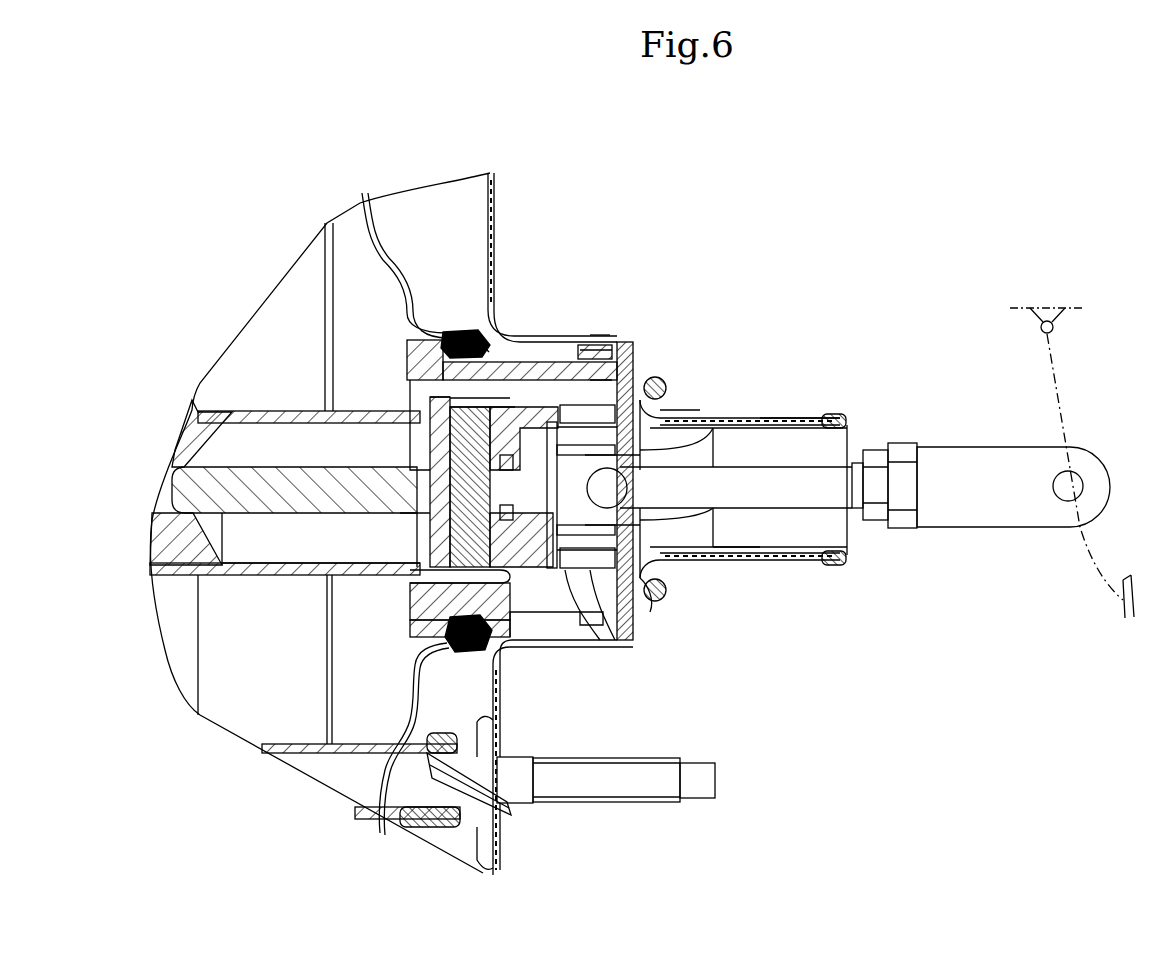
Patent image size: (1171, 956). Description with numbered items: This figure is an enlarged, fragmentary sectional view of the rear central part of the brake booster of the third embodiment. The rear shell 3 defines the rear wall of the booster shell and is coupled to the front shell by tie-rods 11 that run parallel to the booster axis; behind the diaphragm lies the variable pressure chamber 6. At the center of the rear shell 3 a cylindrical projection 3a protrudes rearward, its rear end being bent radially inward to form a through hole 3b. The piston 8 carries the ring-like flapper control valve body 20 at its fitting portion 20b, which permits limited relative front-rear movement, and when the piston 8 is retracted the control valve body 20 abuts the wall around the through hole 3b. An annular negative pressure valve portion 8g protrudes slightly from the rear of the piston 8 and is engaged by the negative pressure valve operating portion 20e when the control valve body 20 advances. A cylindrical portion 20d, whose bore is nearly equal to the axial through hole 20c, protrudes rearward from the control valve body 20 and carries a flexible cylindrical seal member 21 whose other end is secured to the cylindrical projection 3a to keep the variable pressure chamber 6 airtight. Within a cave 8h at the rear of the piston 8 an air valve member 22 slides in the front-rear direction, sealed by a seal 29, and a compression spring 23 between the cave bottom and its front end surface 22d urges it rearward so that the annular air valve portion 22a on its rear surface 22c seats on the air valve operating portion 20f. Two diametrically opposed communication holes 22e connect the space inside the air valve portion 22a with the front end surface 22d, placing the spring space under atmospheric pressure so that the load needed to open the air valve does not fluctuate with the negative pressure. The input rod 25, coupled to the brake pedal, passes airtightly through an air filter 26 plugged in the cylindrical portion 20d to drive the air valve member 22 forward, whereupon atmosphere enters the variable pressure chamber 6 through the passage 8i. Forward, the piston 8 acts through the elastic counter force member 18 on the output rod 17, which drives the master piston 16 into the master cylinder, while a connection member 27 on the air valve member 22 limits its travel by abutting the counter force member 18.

The rear shell 3 is at (493, 226).
The cylindrical projection 3a is at (595, 385).
The through hole 3b is at (658, 573).
The variable pressure chamber 6 is at (478, 200).
The piston 8 is at (517, 368).
The negative pressure valve portion 8g is at (615, 360).
The cave 8h is at (558, 548).
The passage 8i is at (600, 612).
The tie-rods 11 is at (395, 790).
The master piston 16 is at (270, 407).
The output rod 17 is at (297, 495).
The counter force member 18 is at (412, 398).
The control valve body 20 is at (657, 563).
The fitting portion 20b is at (609, 335).
The through hole 20c is at (730, 557).
The cylindrical portion 20d is at (790, 563).
The negative pressure valve operating portion 20e is at (645, 385).
The air valve operating portion 20f is at (640, 525).
The seal member 21 is at (790, 418).
The air valve member 22 is at (630, 487).
The air valve portion 22a is at (657, 395).
The rear surface 22c is at (687, 417).
The front end surface 22d is at (562, 480).
The communication holes 22e is at (713, 427).
The compression spring 23 is at (582, 610).
The input rod 25 is at (817, 493).
The air filter 26 is at (833, 527).
The connection member 27 is at (430, 458).
The seal 29 is at (630, 625).